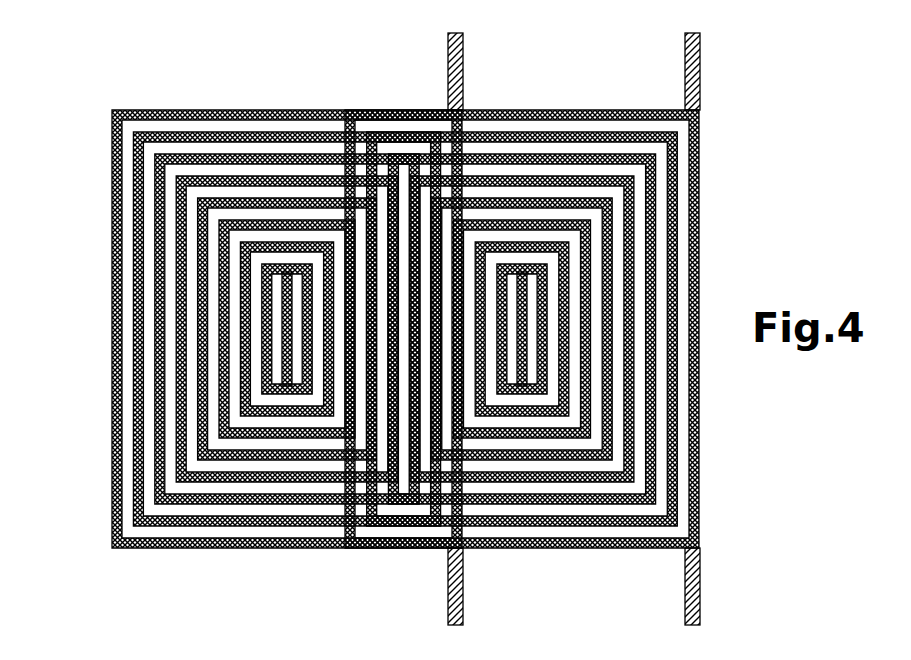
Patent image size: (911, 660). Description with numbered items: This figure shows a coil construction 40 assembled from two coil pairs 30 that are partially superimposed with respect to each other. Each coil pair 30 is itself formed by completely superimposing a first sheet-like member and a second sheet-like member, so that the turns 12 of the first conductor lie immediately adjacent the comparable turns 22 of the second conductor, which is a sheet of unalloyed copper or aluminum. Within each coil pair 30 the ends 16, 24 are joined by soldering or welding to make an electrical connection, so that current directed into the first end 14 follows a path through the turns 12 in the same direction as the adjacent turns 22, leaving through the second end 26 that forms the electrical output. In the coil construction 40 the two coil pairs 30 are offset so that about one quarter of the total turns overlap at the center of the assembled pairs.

The coil construction 40 is at (525, 50).
The coil pair 30 is at (225, 88).
The turns 12 is at (405, 361).
The turns 22 is at (232, 544).
The second end 16 is at (424, 344).
The first end 24 is at (285, 328).
The second end 26 is at (448, 66).
The first end 14 is at (449, 595).